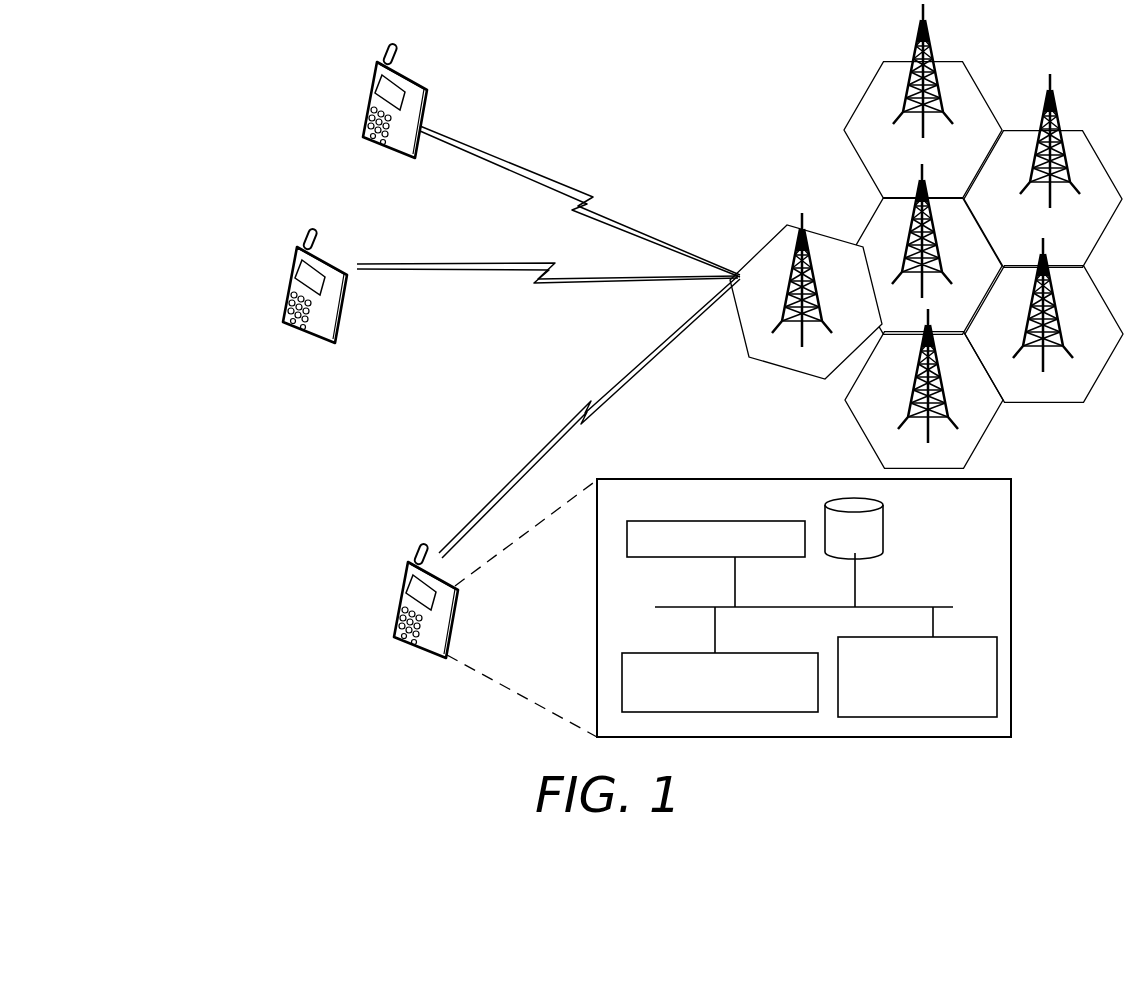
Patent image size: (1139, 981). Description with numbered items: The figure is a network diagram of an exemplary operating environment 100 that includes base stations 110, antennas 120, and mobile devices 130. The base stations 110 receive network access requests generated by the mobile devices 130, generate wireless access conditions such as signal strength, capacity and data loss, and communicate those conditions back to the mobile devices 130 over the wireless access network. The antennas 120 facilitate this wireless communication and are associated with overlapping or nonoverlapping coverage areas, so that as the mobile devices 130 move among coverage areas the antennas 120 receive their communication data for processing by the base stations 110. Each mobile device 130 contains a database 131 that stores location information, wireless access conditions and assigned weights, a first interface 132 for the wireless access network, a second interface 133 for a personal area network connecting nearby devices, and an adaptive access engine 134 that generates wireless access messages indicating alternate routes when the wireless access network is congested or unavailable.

The operating environment 100 is at (279, 80).
The base stations 110 is at (962, 62).
The antennas 120 is at (800, 213).
The mobile devices 130 is at (350, 268).
The database 131 is at (854, 496).
The first interface 132 is at (741, 513).
The second interface 133 is at (720, 712).
The adaptive access engine 134 is at (930, 717).